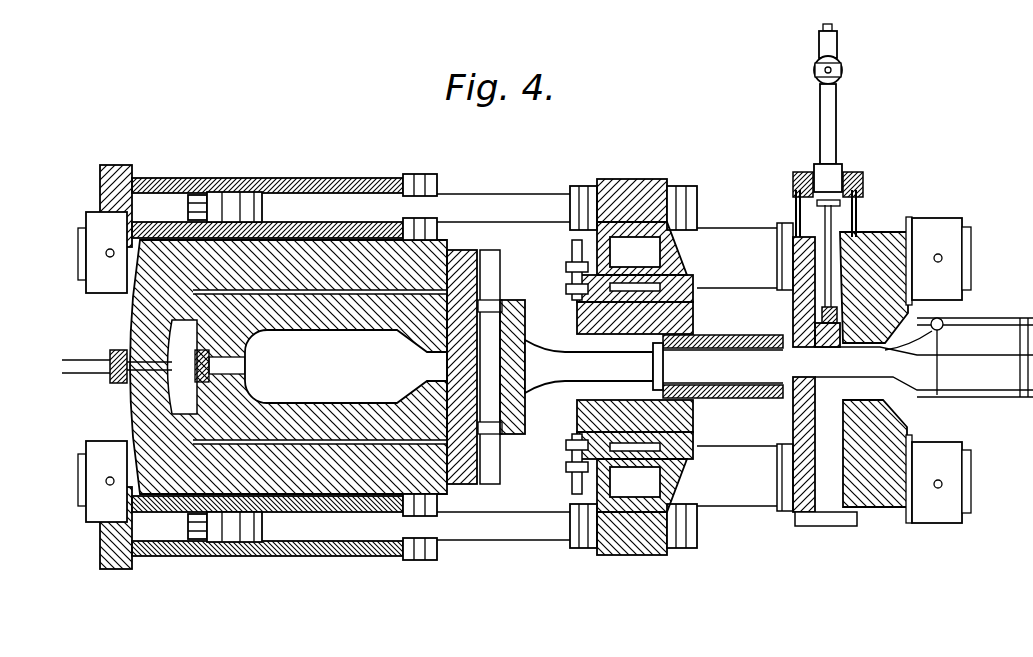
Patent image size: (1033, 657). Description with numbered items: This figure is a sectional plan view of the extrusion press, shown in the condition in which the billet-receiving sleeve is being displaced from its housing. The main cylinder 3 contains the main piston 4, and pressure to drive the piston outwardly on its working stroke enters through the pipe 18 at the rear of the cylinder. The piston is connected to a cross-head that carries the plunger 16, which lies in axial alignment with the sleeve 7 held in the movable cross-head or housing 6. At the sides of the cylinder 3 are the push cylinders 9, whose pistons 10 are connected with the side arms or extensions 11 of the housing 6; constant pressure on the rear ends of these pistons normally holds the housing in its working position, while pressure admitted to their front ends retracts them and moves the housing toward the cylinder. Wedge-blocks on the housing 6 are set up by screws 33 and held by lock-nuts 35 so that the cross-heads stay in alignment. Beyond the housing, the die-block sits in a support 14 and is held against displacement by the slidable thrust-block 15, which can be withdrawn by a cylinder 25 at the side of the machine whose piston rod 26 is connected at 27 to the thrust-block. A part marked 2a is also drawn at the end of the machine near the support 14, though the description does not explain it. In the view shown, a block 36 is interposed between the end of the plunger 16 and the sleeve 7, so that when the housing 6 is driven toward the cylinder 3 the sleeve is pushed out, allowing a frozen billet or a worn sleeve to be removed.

The cylinder 3 is at (131, 330).
The main piston 4 is at (312, 322).
The movable cross-head or housing 6 is at (580, 296).
The sleeve 7 is at (730, 403).
The push cylinders 9 is at (297, 178).
The pistons 10 is at (211, 192).
The side arms or extensions 11 is at (631, 180).
The support 14 is at (800, 399).
The thrust-block 15 is at (817, 337).
The plunger 16 is at (589, 366).
The pipe 18 is at (76, 361).
The cylinder 25 is at (836, 117).
The rod 26 is at (793, 226).
The connection 27 is at (817, 313).
The screws 33 is at (566, 286).
The lock-nuts 35 is at (567, 274).
The block 36 is at (664, 366).
The valve body 2a is at (893, 237).